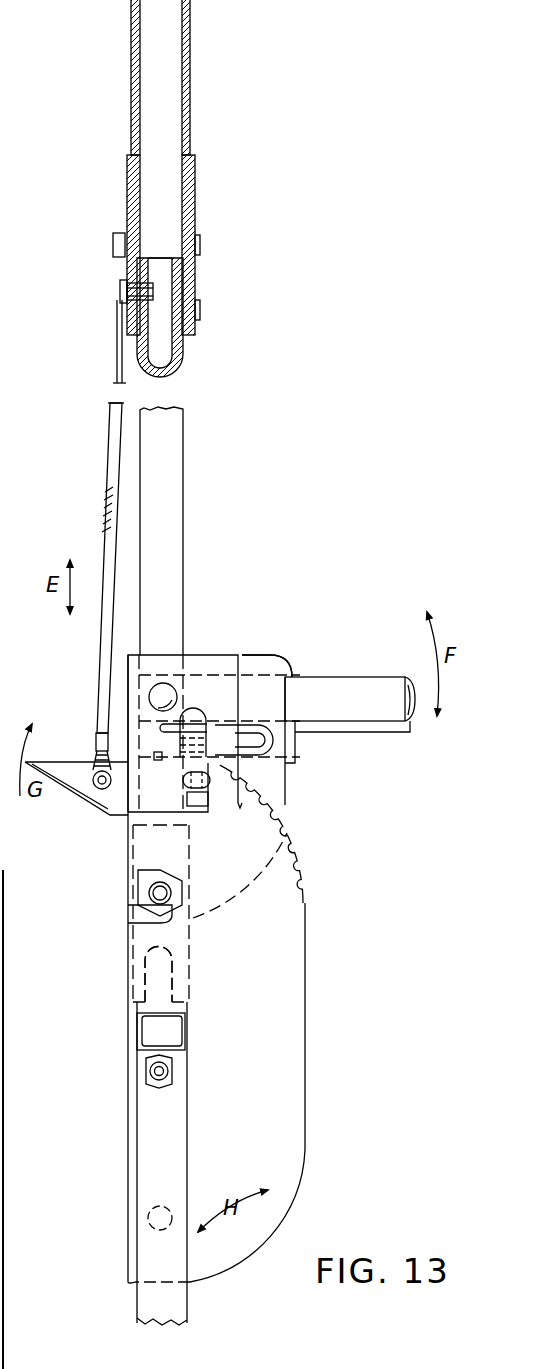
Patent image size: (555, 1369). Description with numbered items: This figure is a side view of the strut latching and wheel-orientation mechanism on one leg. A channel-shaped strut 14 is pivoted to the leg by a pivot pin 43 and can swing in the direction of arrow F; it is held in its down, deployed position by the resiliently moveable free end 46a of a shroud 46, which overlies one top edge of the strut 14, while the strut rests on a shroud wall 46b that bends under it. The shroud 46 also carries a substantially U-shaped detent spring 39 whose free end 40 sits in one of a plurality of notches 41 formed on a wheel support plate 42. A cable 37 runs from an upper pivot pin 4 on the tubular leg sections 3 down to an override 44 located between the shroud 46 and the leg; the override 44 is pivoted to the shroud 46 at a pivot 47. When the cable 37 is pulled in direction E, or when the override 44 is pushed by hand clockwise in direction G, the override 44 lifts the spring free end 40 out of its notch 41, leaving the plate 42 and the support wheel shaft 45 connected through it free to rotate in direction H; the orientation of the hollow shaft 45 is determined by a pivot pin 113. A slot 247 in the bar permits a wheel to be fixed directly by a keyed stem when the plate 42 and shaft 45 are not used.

The tubular legs 3 is at (128, 157).
The pivot pin 4 is at (113, 242).
The cable 37 is at (116, 428).
The pivot pin 43 is at (150, 697).
The free end 40 is at (158, 757).
The shroud 46 is at (198, 655).
The free end 46a is at (270, 657).
The shroud wall 46b is at (297, 746).
The detent spring 39 is at (270, 763).
The strut 14 is at (348, 685).
The override 44 is at (100, 795).
The pivot 47 is at (195, 792).
The notches 41 is at (301, 893).
The wheel support plate 42 is at (294, 1022).
The slot 247 is at (155, 983).
The pivot pin 113 is at (146, 1072).
The support wheel shaft 45 is at (146, 1308).